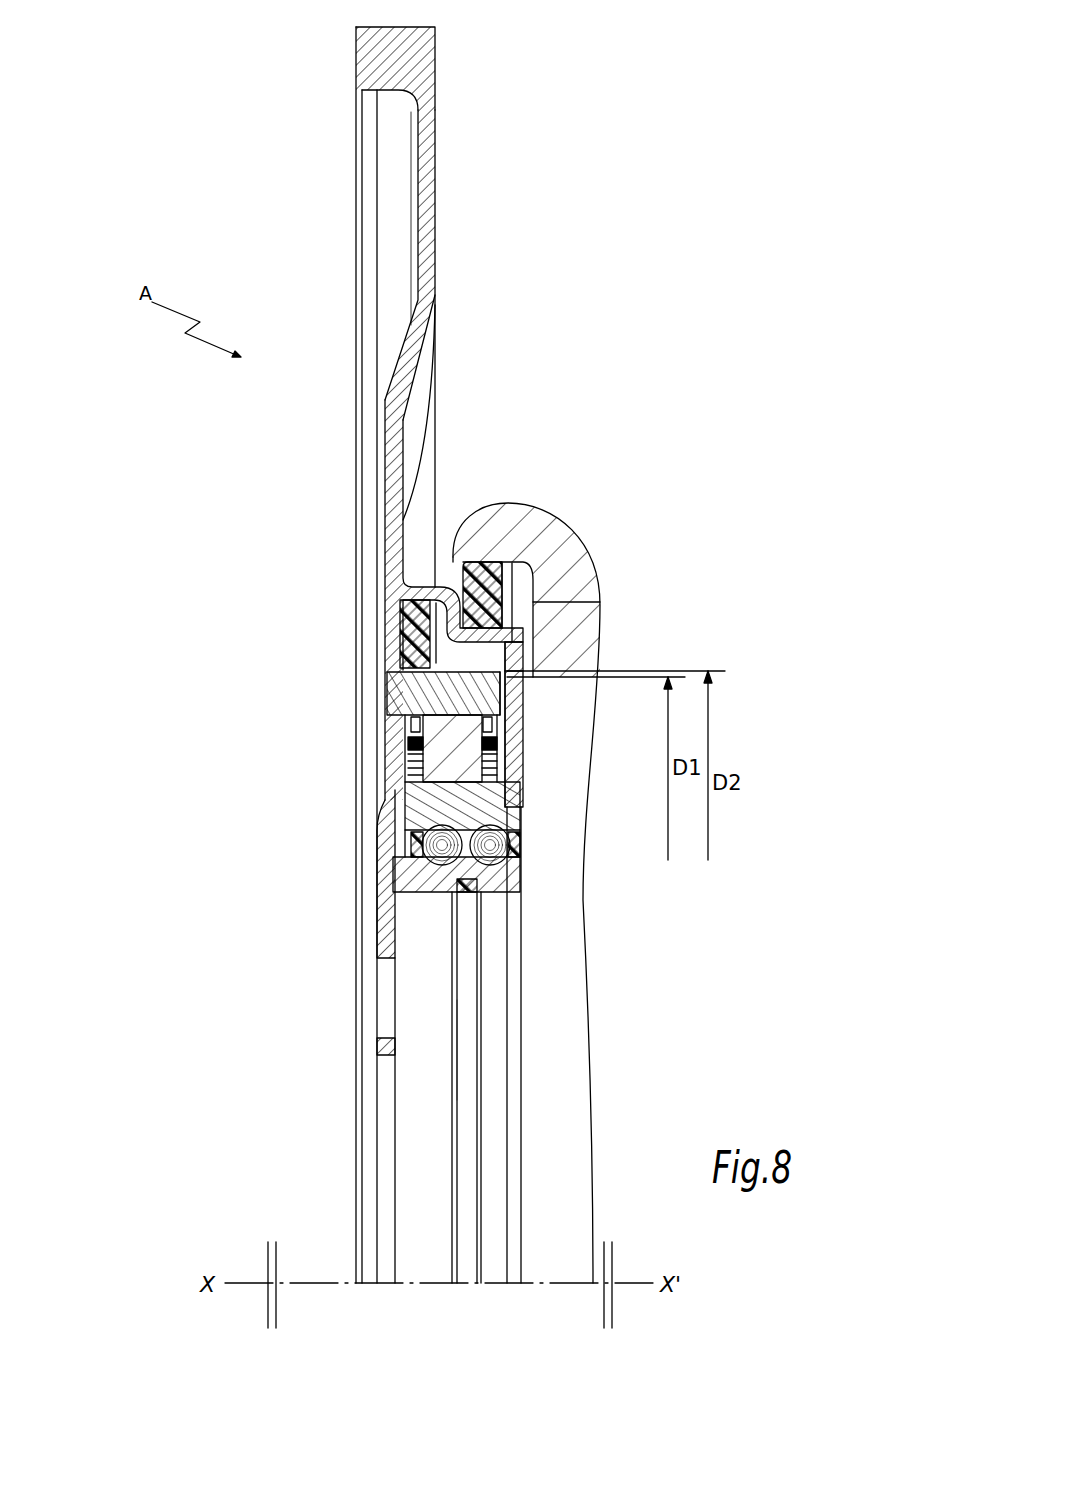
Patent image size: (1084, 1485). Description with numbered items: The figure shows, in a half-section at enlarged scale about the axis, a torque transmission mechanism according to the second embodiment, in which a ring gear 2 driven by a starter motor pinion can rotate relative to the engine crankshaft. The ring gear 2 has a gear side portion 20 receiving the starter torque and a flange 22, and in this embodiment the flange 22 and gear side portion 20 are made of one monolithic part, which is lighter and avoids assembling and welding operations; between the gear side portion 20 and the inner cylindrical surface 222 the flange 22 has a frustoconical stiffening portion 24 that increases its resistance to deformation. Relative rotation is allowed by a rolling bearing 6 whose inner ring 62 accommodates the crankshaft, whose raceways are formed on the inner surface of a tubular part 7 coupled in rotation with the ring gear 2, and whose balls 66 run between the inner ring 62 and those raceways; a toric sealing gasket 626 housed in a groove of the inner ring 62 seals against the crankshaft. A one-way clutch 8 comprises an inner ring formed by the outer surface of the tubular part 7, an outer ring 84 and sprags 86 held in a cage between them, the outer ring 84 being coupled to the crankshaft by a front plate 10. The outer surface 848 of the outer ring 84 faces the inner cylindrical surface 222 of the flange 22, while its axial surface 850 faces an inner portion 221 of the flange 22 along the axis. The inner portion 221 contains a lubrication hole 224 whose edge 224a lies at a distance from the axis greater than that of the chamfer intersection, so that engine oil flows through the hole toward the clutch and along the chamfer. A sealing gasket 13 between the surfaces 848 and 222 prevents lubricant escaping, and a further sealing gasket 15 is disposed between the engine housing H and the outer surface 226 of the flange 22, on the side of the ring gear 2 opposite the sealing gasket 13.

The ring gear 2 is at (452, 160).
The gear side portion 20 is at (375, 48).
The flange 22 is at (437, 215).
The frustoconical stiffening portion 24 is at (420, 347).
The front plate 10 is at (393, 942).
The sealing gasket 15 is at (462, 568).
The housing H is at (538, 522).
The outer surface 226 is at (555, 535).
The inner portion 221 is at (518, 660).
The inner cylindrical surface 222 is at (483, 560).
The sealing gasket 13 is at (400, 616).
The one-way clutch 8 is at (176, 706).
The outer surface 848 is at (393, 666).
The outer ring 84 is at (396, 688).
The sprags 86 is at (457, 750).
The lubrication hole 224 is at (534, 745).
The axial surface 850 is at (520, 702).
The edge 224a is at (533, 681).
The rolling bearing 6 is at (184, 777).
The tubular part 7 is at (432, 800).
The balls 66 is at (488, 846).
The inner ring 62 is at (393, 905).
The toric sealing gasket 626 is at (465, 1042).